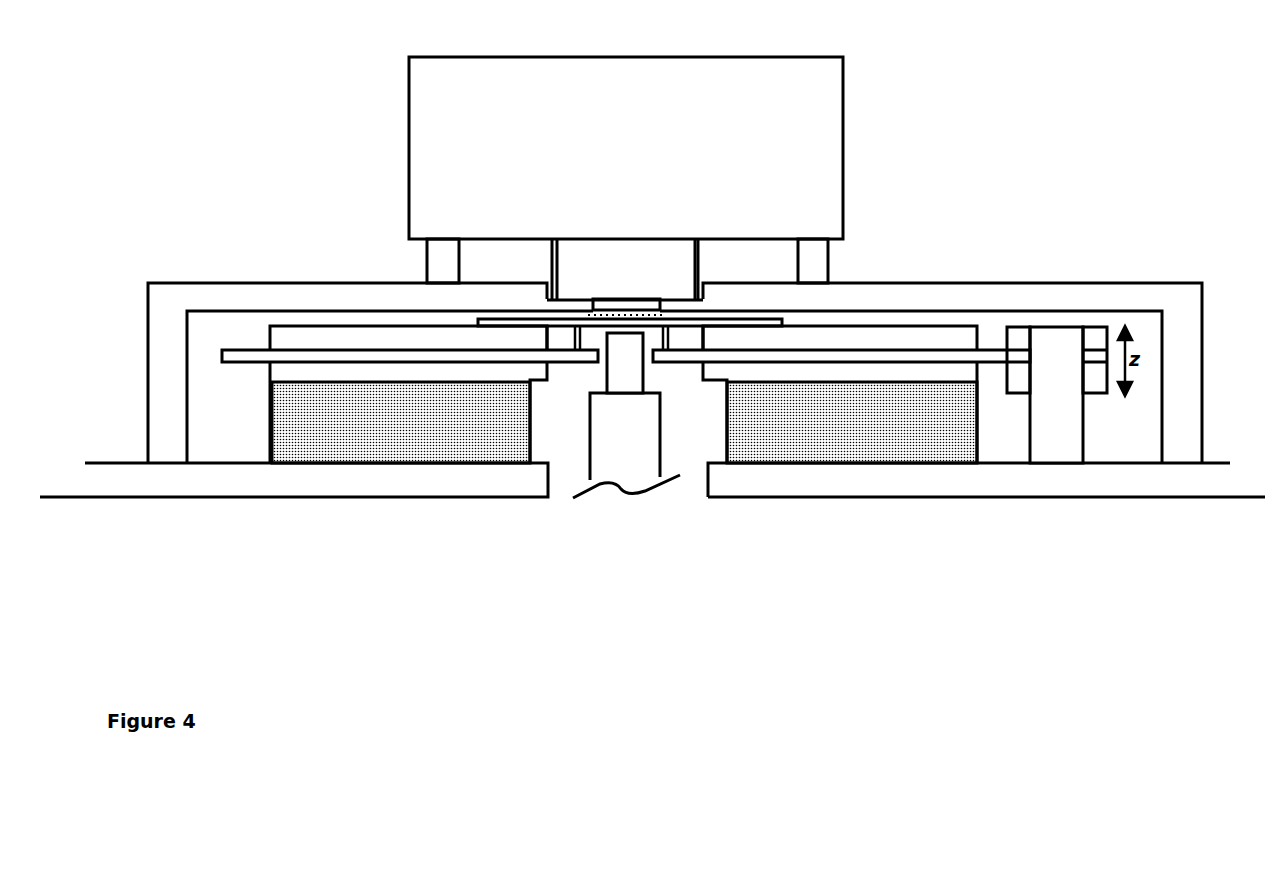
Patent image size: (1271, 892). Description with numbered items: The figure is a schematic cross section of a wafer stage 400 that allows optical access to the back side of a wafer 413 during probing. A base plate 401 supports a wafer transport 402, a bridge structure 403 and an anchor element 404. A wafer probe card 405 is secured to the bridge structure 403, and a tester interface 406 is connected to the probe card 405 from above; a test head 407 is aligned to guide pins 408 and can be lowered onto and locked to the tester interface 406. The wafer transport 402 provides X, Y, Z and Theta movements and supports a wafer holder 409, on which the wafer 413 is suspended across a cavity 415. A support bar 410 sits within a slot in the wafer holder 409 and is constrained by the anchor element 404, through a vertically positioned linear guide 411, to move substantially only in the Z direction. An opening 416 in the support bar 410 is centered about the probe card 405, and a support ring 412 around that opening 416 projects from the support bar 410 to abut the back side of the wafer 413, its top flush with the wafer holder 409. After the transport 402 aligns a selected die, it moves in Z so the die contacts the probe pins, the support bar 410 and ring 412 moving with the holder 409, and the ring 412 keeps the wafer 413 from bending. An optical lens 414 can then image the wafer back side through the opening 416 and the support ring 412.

The wafer stage 400 is at (523, 558).
The base plate 401 is at (248, 480).
The wafer transport 402 is at (267, 432).
The bridge structure 403 is at (168, 372).
The anchor element 404 is at (1084, 443).
The wafer probe card 405 is at (635, 307).
The tester interface 406 is at (608, 267).
The test head 407 is at (758, 87).
The guide pins 408 is at (825, 257).
The wafer holder 409 is at (290, 340).
The support bar 410 is at (562, 355).
The linear guide 411 is at (1088, 378).
The support ring 412 is at (579, 332).
The wafer 413 is at (755, 318).
The optical lens 414 is at (625, 450).
The cavity 415 is at (558, 337).
The opening 416 is at (648, 355).